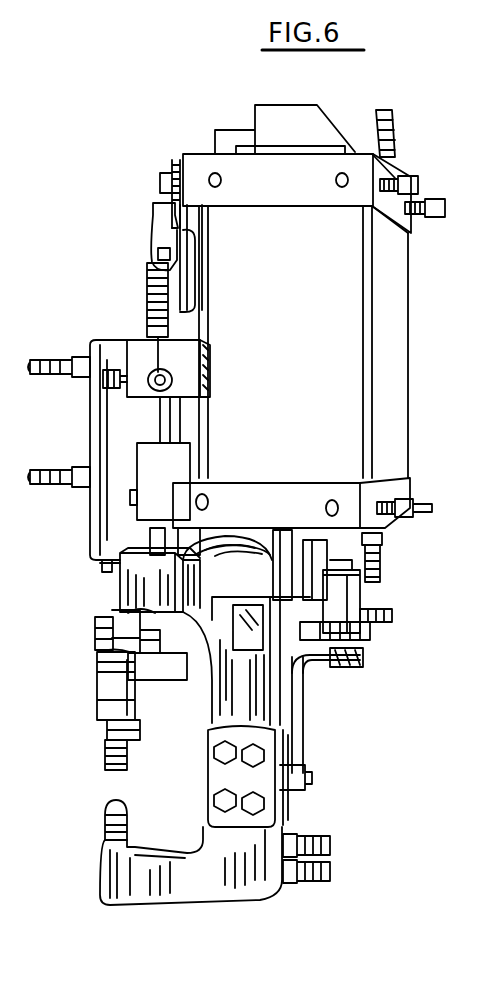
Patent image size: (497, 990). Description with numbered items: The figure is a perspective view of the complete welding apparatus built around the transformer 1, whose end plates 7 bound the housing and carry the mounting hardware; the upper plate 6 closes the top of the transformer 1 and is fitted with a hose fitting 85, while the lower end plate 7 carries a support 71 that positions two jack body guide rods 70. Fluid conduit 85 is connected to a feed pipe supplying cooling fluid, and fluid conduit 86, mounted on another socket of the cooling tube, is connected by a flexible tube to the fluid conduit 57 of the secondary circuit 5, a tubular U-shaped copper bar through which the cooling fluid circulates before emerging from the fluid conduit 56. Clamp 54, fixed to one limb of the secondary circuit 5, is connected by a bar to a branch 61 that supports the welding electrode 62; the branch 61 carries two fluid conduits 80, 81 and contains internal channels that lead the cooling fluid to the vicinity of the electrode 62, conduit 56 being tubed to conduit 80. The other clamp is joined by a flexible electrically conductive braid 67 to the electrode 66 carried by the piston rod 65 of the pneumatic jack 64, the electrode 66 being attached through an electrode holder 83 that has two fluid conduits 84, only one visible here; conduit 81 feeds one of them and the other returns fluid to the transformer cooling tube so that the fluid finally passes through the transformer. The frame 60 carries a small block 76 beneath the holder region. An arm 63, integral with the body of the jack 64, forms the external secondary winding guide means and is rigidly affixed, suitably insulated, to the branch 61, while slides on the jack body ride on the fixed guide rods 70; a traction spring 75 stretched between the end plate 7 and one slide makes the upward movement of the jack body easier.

The transformer 1 is at (397, 293).
The secondary circuit 5 is at (363, 597).
The top mounting plate 6 is at (205, 160).
The end plate 7 is at (387, 490).
The clamp 54 is at (300, 688).
The fluid conduit 56 is at (370, 633).
The fluid conduit 57 is at (392, 617).
The frame 60 is at (237, 847).
The branch 61 is at (152, 888).
The welding electrode 62 is at (108, 812).
The arm 63 is at (117, 565).
The pneumatic jack 64 is at (108, 423).
The piston rod 65 is at (115, 601).
The electrode 66 is at (127, 750).
The flexible electrically conductive braid 67 is at (305, 545).
The guide rod 70 is at (205, 521).
The support 71 is at (165, 458).
The traction spring 75 is at (148, 298).
The block 76 is at (178, 680).
The fluid conduit 80 is at (333, 837).
The fluid conduit 81 is at (332, 865).
The electrode holder 83 is at (97, 677).
The fluid conduit 84 is at (95, 628).
The fluid conduit 85 is at (392, 134).
The fluid conduit 86 is at (383, 543).